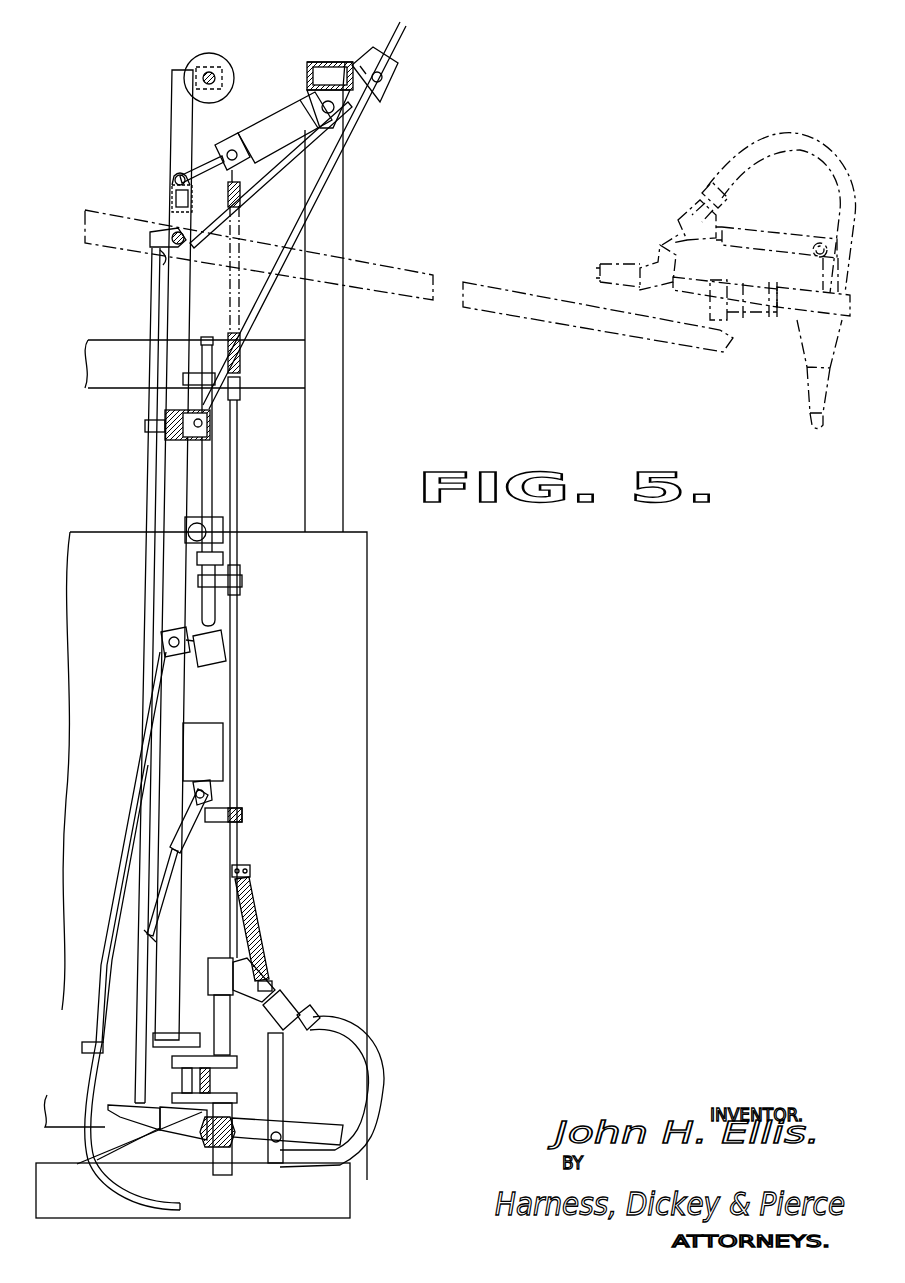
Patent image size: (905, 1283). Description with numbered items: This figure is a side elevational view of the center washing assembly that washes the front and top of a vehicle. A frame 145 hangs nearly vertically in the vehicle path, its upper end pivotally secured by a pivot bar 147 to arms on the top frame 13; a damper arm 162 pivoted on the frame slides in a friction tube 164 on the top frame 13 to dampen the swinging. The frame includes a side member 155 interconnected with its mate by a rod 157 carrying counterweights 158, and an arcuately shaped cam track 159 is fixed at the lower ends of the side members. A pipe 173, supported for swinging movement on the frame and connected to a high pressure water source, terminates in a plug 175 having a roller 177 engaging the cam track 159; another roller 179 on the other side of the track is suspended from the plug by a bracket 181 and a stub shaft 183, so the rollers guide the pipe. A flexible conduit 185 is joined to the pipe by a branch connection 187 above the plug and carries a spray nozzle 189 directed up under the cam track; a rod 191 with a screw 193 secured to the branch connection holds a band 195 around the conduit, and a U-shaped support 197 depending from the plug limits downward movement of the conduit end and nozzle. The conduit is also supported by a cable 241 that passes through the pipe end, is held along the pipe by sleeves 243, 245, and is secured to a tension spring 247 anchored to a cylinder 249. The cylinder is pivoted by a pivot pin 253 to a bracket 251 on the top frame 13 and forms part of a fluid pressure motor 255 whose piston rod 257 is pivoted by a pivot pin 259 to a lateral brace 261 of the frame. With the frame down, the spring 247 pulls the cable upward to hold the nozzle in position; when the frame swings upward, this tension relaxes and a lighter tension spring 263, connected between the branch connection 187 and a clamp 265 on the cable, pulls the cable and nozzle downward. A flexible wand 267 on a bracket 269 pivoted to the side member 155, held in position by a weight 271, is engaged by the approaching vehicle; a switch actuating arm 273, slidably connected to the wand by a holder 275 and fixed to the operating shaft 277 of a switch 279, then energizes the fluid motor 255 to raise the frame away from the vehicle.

The top frame 13 is at (338, 60).
The frame 145 is at (150, 472).
The pivot bar 147 is at (152, 243).
The side member 155 is at (167, 583).
The rod 157 is at (207, 70).
The counterweights 158 is at (228, 62).
The cam track 159 is at (125, 1157).
The damper arm 162 is at (322, 197).
The friction tube 164 is at (398, 63).
The pipe 173 is at (212, 485).
The plug 175 is at (237, 1087).
The roller 177 is at (237, 1100).
The roller 179 is at (158, 1128).
The bracket 181 is at (185, 1070).
The stub shaft 183 is at (237, 1066).
The flexible conduit 185 is at (380, 1073).
The branch connection 187 is at (260, 937).
The spray nozzle 189 is at (115, 1103).
The rod 191 is at (300, 1118).
The screw 193 is at (305, 1005).
The band 195 is at (278, 1167).
The U-shaped support 197 is at (215, 1172).
The cable 241 is at (240, 838).
The sleeve 243 is at (242, 810).
The sleeve 245 is at (242, 567).
The tension spring 247 is at (215, 372).
The cylinder 249 is at (302, 142).
The bracket 251 is at (312, 90).
The pivot pin 253 is at (333, 92).
The fluid pressure motor 255 is at (297, 166).
The piston rod 257 is at (205, 158).
The pivot pin 259 is at (188, 168).
The lateral brace 261 is at (172, 198).
The tension spring 263 is at (253, 893).
The clamp 265 is at (247, 868).
The flexible wand 267 is at (90, 1062).
The bracket 269 is at (167, 648).
The weight 271 is at (213, 648).
The switch actuating arm 273 is at (130, 1000).
The holder 275 is at (83, 1045).
The operating shaft 277 is at (193, 790).
The switch 279 is at (223, 757).